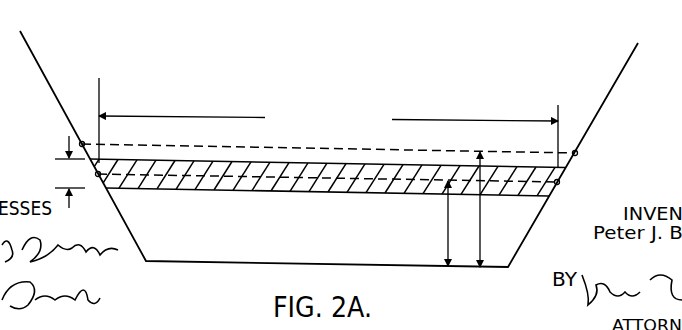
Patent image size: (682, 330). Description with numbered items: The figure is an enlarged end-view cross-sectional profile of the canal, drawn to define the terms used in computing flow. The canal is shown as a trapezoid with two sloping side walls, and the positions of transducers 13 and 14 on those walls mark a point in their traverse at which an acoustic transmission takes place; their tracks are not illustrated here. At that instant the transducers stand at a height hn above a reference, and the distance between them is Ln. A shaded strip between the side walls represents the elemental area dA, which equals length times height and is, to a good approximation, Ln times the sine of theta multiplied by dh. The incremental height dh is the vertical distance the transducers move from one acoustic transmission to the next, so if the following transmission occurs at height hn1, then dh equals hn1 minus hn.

The transducer 13 is at (95, 186).
The transducer 14 is at (560, 182).
The elemental area dA is at (343, 194).
The incremental height dh is at (70, 172).
The distance between the transducers Ln is at (328, 123).
The height h_n hn is at (447, 217).
The height h_n+1 hn1 is at (480, 226).